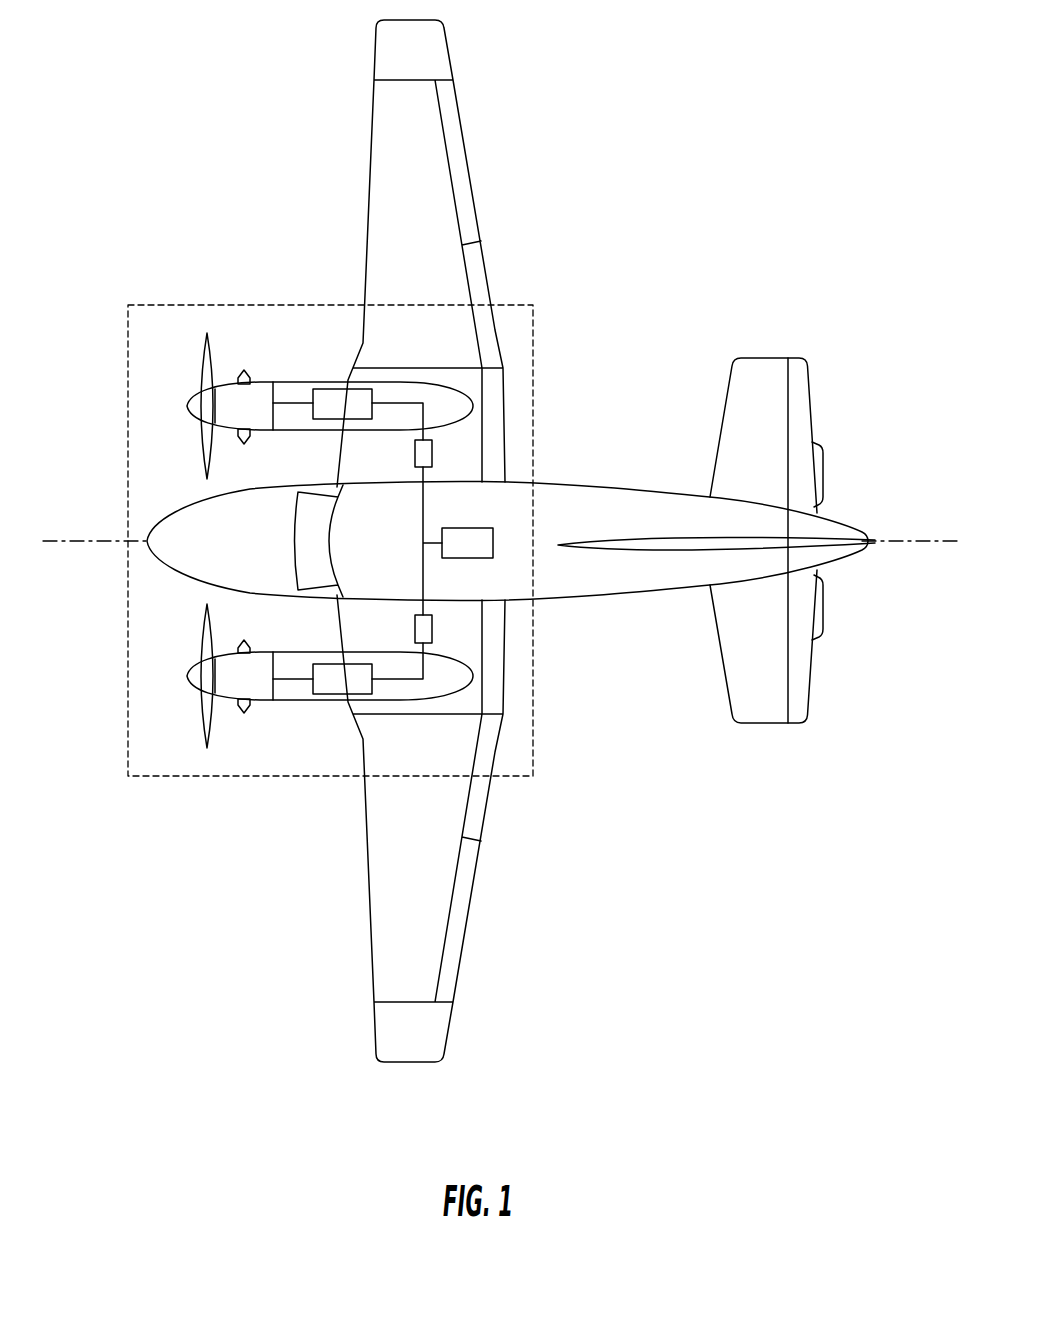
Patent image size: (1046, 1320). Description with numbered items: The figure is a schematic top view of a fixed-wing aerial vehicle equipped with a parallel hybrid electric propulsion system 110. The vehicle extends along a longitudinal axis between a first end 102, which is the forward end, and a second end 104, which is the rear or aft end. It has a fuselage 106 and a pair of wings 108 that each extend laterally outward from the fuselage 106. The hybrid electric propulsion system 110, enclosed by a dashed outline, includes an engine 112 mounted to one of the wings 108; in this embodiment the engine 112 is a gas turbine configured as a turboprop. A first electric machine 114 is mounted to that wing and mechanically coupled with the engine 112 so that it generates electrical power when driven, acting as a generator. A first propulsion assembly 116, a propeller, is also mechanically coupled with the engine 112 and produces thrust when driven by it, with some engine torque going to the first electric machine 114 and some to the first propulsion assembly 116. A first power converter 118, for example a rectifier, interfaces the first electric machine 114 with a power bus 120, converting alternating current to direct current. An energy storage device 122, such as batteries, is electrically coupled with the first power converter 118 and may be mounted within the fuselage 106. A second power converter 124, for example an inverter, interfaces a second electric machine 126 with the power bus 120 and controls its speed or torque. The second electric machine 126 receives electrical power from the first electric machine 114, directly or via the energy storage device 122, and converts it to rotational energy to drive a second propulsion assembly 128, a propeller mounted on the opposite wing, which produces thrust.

The first end 102 is at (138, 574).
The second end 104 is at (805, 757).
The fuselage 106 is at (640, 492).
The wings 108 is at (378, 180).
The hybrid electric propulsion system 110 is at (533, 318).
The engine 112 is at (396, 712).
The first electric machine 114 is at (328, 688).
The first propulsion assembly 116 is at (182, 740).
The first power converter 118 is at (430, 632).
The power bus 120 is at (424, 582).
The energy storage device 122 is at (468, 543).
The second power converter 124 is at (420, 452).
The second electric machine 126 is at (325, 405).
The second propulsion assembly 128 is at (180, 357).